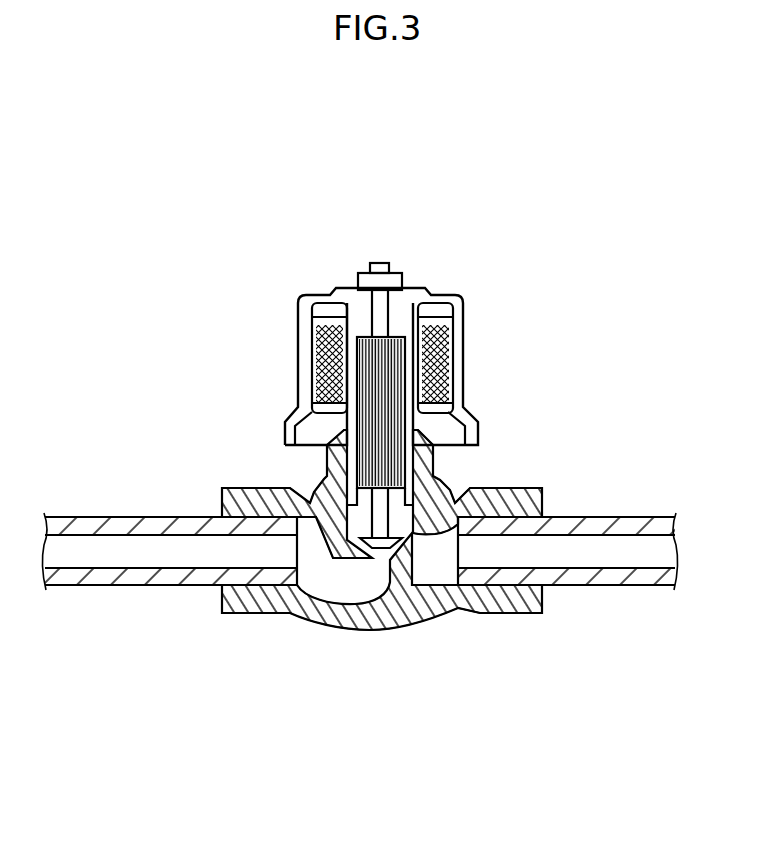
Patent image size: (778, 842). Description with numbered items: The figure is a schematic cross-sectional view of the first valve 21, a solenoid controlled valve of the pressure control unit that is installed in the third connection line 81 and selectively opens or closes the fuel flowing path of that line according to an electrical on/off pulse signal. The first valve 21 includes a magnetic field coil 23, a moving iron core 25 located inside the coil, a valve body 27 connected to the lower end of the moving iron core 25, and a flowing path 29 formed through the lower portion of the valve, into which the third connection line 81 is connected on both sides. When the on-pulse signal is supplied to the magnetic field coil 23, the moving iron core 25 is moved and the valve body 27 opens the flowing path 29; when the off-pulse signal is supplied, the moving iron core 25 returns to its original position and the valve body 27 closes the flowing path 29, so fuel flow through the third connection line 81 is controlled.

The first valve 21 is at (494, 287).
The magnetic field coil 23 is at (452, 355).
The moving iron core 25 is at (373, 413).
The valve body 27 is at (393, 535).
The flowing path 29 is at (513, 615).
The third connection line 81 is at (123, 517).